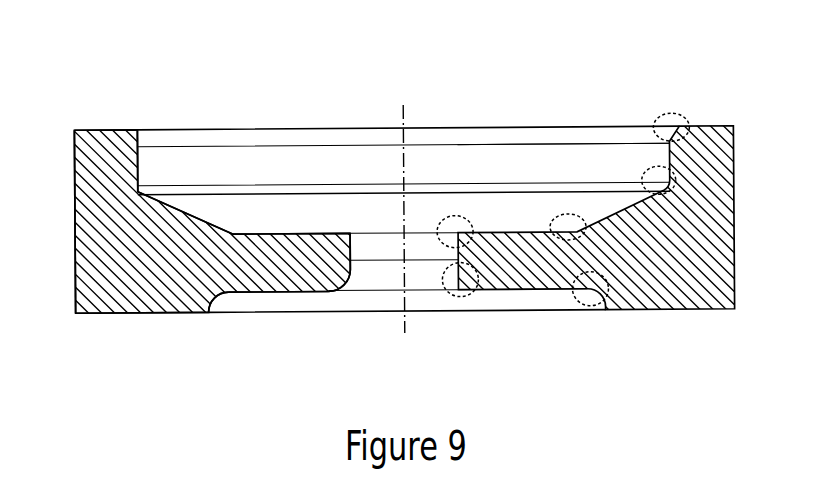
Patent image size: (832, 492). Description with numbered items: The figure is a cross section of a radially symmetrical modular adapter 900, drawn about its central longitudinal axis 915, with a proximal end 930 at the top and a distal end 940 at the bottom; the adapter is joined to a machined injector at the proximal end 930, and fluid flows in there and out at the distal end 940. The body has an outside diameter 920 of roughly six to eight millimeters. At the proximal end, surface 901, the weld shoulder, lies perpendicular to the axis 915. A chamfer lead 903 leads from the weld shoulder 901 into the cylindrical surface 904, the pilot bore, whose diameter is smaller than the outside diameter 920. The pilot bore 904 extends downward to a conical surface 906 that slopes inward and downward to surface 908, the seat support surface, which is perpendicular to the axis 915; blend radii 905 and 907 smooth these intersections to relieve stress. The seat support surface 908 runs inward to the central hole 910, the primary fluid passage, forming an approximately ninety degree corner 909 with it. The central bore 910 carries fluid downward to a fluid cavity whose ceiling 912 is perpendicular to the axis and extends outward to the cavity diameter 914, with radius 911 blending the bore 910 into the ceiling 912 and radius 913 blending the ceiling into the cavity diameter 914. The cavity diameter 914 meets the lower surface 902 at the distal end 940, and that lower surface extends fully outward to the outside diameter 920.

The modular adapter 900 is at (147, 264).
The weld shoulder 901 is at (102, 131).
The lower surface 902 is at (97, 313).
The chamfer lead 903 is at (671, 114).
The pilot bore 904 is at (146, 165).
The blend radius 905 is at (678, 182).
The conical surface 906 is at (188, 208).
The blend radius 907 is at (567, 215).
The seat support surface 908 is at (312, 230).
The corner 909 is at (452, 216).
The central bore 910 is at (369, 252).
The radius 911 is at (447, 297).
The fluid cavity ceiling 912 is at (277, 292).
The radius 913 is at (591, 307).
The cavity diameter 914 is at (222, 307).
The central longitudinal axis 915 is at (404, 110).
The outside diameter 920 is at (76, 223).
The proximal end 930 is at (469, 111).
The distal end 940 is at (471, 329).